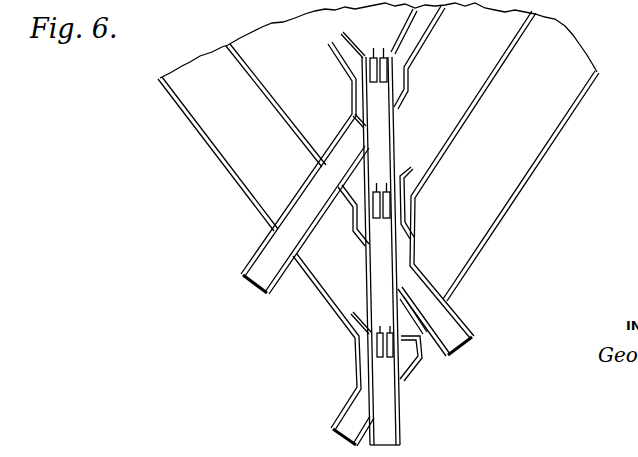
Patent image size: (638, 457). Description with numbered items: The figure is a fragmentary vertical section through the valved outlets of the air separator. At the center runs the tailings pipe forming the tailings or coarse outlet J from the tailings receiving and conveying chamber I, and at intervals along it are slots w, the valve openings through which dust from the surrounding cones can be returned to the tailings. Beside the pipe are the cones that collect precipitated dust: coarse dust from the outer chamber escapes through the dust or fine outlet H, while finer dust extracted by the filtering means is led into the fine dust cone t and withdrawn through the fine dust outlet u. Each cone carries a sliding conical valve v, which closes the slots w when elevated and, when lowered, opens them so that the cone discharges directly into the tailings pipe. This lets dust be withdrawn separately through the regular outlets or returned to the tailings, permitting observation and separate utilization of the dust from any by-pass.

The tailings receiving and conveying chamber I is at (379, 33).
The tailings or coarse outlet J is at (381, 251).
The dust or fine outlet H is at (333, 350).
The fine dust cone t is at (521, 180).
The fine dust outlet u is at (461, 319).
The sliding conical valve v is at (404, 41).
The slots w is at (352, 313).